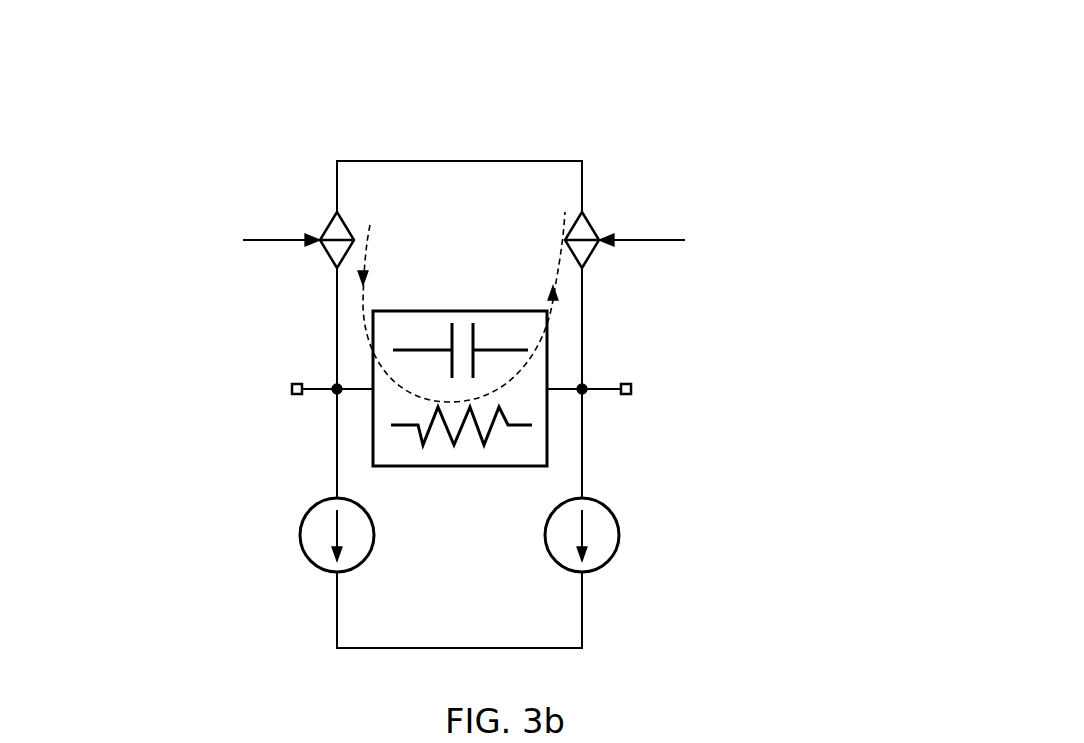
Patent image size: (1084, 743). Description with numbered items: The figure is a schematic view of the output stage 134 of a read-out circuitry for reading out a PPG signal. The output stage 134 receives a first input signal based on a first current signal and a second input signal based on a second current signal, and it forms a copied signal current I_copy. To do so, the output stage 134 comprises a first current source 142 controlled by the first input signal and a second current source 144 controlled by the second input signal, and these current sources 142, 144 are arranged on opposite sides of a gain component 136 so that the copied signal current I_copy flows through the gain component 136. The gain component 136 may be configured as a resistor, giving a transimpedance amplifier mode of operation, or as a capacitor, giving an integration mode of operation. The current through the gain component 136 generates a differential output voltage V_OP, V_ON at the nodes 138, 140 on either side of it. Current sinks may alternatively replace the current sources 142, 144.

The output stage 134 is at (703, 135).
The gain component 136 is at (547, 447).
The node 138 is at (300, 397).
The node 140 is at (627, 383).
The first current source 142 is at (343, 226).
The second current source 144 is at (580, 233).